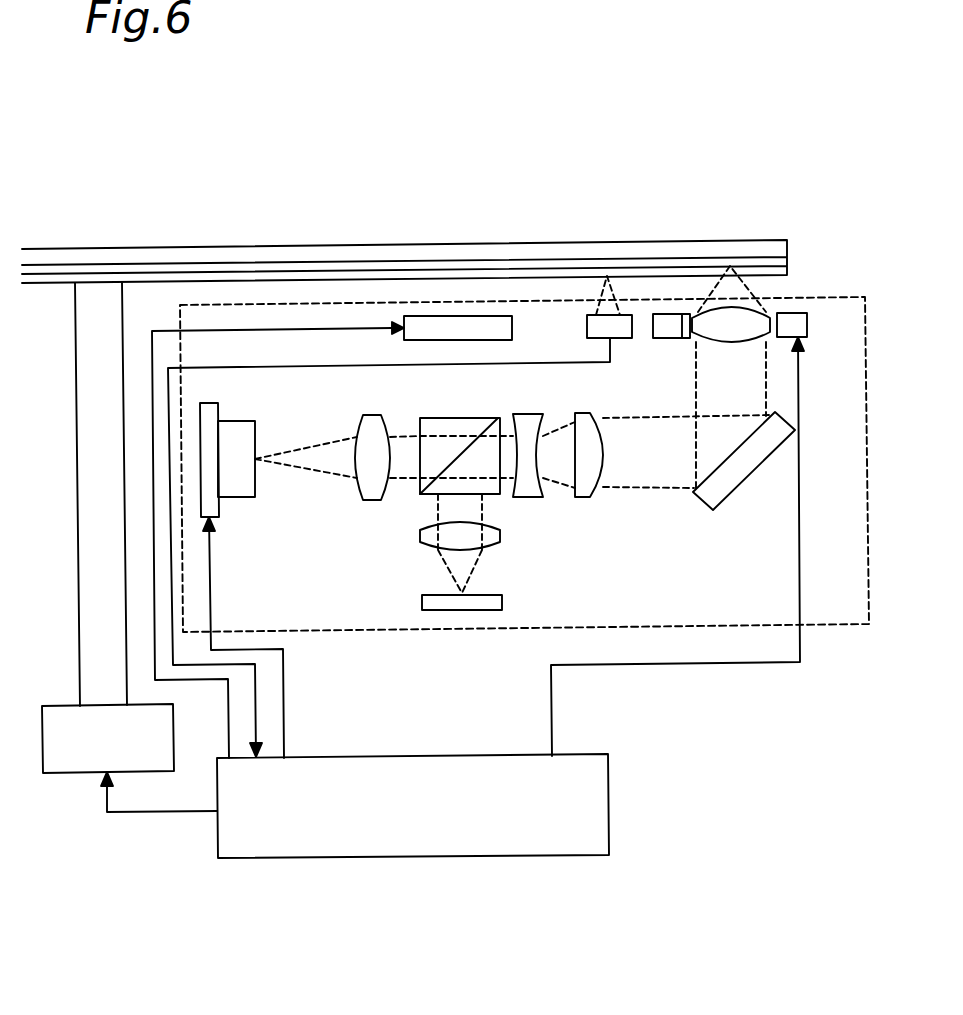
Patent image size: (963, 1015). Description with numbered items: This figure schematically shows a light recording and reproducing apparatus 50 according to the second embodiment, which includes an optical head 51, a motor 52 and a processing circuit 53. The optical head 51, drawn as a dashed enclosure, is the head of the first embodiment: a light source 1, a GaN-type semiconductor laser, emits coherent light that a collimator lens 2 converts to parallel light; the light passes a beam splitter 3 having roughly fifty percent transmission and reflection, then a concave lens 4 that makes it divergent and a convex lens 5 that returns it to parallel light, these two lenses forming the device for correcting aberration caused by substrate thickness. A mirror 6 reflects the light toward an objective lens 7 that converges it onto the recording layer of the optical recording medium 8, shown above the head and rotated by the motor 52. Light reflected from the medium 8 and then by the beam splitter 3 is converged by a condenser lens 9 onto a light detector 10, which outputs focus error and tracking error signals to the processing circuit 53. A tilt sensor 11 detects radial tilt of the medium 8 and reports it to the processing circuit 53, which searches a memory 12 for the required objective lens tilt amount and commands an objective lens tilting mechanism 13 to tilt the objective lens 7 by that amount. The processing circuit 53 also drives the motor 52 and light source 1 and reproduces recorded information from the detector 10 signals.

The light source 1 is at (240, 498).
The collimator lens 2 is at (372, 500).
The beam splitter 3 is at (426, 496).
The concave lens 4 is at (532, 498).
The convex lens 5 is at (587, 499).
The mirror 6 is at (752, 467).
The objective lens 7 is at (770, 316).
The optical recording medium 8 is at (690, 236).
The condenser lens 9 is at (500, 535).
The light detector 10 is at (502, 602).
The tilt sensor 11 is at (587, 330).
The memory 12 is at (485, 340).
The objective lens tilting mechanism 13 is at (807, 331).
The light recording and reproducing apparatus 50 is at (161, 177).
The optical head 51 is at (385, 634).
The motor 52 is at (63, 773).
The processing circuit 53 is at (492, 857).